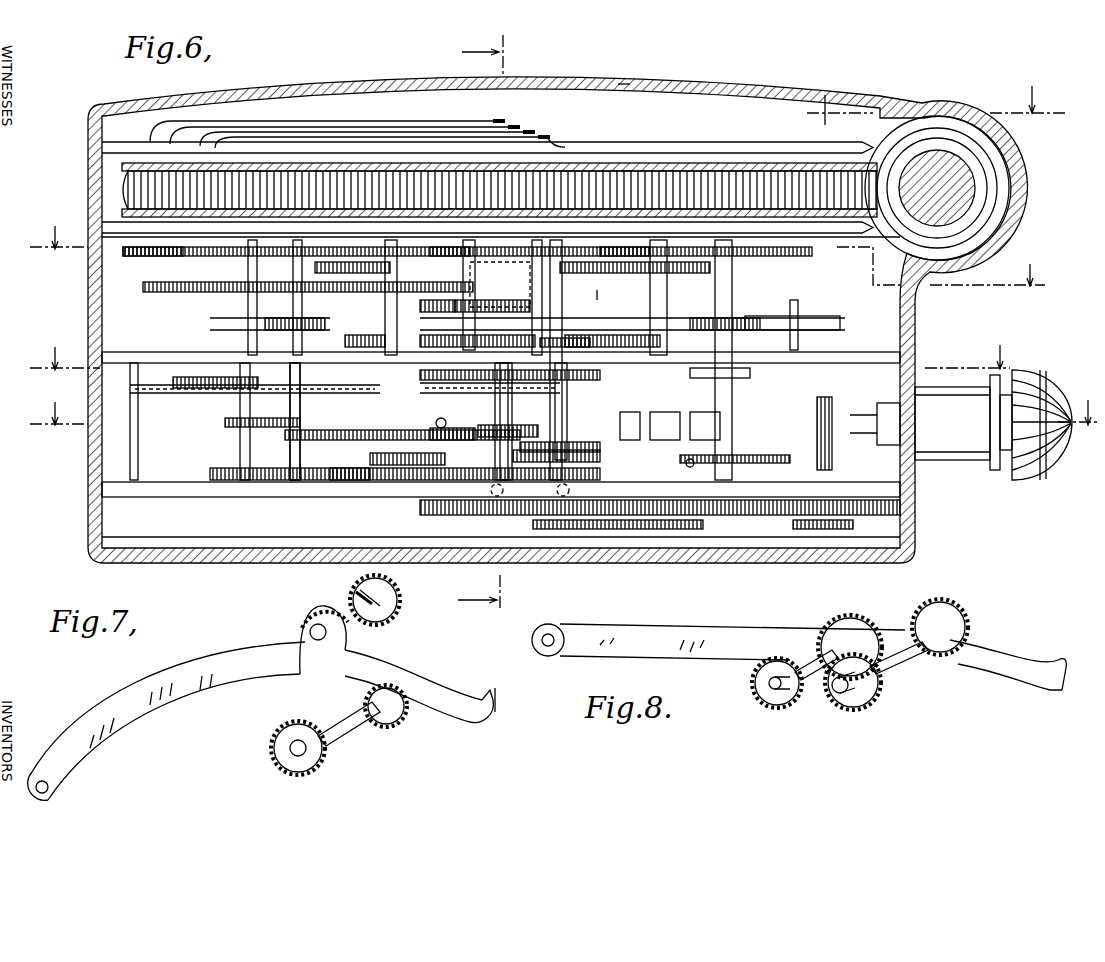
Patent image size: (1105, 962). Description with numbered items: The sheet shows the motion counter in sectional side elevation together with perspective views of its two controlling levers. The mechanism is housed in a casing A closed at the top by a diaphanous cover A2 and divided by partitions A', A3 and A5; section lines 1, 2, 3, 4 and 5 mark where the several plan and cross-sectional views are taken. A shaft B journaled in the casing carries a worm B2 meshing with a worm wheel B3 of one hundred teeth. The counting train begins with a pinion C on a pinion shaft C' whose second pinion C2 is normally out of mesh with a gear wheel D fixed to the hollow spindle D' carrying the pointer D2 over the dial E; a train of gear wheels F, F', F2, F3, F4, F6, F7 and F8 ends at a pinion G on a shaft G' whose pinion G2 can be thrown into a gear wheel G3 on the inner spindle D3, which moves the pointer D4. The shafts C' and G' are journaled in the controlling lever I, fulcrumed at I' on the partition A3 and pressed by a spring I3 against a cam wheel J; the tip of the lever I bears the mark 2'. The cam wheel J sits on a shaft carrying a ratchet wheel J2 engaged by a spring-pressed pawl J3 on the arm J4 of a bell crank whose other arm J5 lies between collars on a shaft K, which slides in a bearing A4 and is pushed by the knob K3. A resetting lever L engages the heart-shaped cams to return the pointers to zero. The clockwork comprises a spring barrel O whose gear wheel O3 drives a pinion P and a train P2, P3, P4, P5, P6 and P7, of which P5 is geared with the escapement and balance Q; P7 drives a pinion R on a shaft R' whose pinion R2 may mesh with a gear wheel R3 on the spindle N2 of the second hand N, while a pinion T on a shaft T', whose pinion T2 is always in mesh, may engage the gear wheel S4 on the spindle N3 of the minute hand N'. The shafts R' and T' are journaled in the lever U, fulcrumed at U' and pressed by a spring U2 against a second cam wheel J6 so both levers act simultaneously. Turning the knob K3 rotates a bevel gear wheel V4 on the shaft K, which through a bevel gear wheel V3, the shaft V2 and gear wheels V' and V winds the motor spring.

In FIG. 6, the casing A is at (546, 320).
In FIG. 6, the cover A2 is at (623, 84).
In FIG. 6, the partition A' is at (483, 241).
In FIG. 6, the partition A3 is at (124, 352).
In FIG. 6, the bearing A4 is at (948, 460).
In FIG. 6, the partition A5 is at (138, 482).
In FIG. 6, the shaft B is at (962, 188).
In FIG. 6, the worm B2 is at (980, 208).
In FIG. 6, the worm wheel B3 is at (750, 165).
In FIG. 6, the pointer N is at (322, 107).
In FIG. 6, the pointer N' is at (340, 106).
In FIG. 6, the spindle N2 is at (503, 120).
In FIG. 6, the hollow spindle N3 is at (522, 127).
In FIG. 6, the gear wheel D is at (492, 296).
In FIG. 6, the hollow spindle D' is at (501, 223).
In FIG. 6, the pointer D2 is at (312, 140).
In FIG. 6, the hollow spindle D3 is at (537, 132).
In FIG. 6, the pointer D4 is at (258, 135).
In FIG. 6, the dial E is at (684, 148).
In FIG. 6, the gear wheel F is at (475, 252).
In FIG. 6, the gear wheel F' is at (524, 268).
In FIG. 6, the gear wheel F2 is at (601, 287).
In FIG. 6, the gear wheel F3 is at (437, 314).
In FIG. 6, the gear wheel F4 is at (182, 292).
In FIG. 6, the gear wheel F6 is at (140, 256).
In FIG. 6, the gear wheel F7 is at (437, 246).
In FIG. 6, the gear wheel F8 is at (603, 246).
In FIG. 6, the pinion G is at (500, 284).
In FIG. 7, the pinion G is at (386, 721).
In FIG. 6, the pinion shaft G' is at (562, 360).
In FIG. 7, the pinion shaft G' is at (349, 731).
In FIG. 6, the pinion G2 is at (560, 354).
In FIG. 7, the pinion G2 is at (308, 775).
In FIG. 6, the gear wheel G3 is at (370, 334).
In FIG. 6, the controlling lever I is at (319, 297).
In FIG. 7, the controlling lever I is at (261, 703).
In FIG. 6, the fulcrum I' is at (264, 297).
In FIG. 6, the spring I3 is at (215, 324).
In FIG. 6, the cam wheel J is at (742, 316).
In FIG. 6, the ratchet wheel J2 is at (703, 418).
In FIG. 8, the pawl J3 is at (1066, 645).
In FIG. 6, the arm J4 is at (628, 418).
In FIG. 6, the arm J5 is at (665, 418).
In FIG. 6, the cam wheel J6 is at (727, 373).
In FIG. 6, the shaft K is at (862, 414).
In FIG. 6, the knob K3 is at (1045, 372).
In FIG. 6, the resetting lever L is at (790, 317).
In FIG. 6, the spring barrel O is at (465, 423).
In FIG. 6, the gear wheel O3 is at (685, 470).
In FIG. 6, the pinion P is at (560, 438).
In FIG. 6, the gear wheel P2 is at (388, 482).
In FIG. 6, the gear wheel P3 is at (352, 455).
In FIG. 6, the gear wheel P4 is at (286, 435).
In FIG. 6, the gear wheel P5 is at (210, 472).
In FIG. 6, the gear wheel P6 is at (352, 482).
In FIG. 6, the gear wheel P7 is at (520, 491).
In FIG. 6, the escapement and balance mechanism Q is at (225, 422).
In FIG. 8, the pinion R is at (777, 697).
In FIG. 6, the pinion shaft R' is at (513, 421).
In FIG. 8, the pinion shaft R' is at (816, 638).
In FIG. 6, the pinion R2 is at (508, 423).
In FIG. 8, the pinion R2 is at (860, 622).
In FIG. 6, the gear wheel R3 is at (445, 427).
In FIG. 6, the gear wheel S4 is at (445, 348).
In FIG. 6, the pinion T is at (518, 375).
In FIG. 8, the pinion T is at (940, 619).
In FIG. 6, the pinion shaft T' is at (574, 411).
In FIG. 8, the pinion shaft T' is at (899, 669).
In FIG. 6, the pinion T2 is at (600, 456).
In FIG. 8, the pinion T2 is at (858, 706).
In FIG. 8, the lever U is at (718, 632).
In FIG. 6, the fulcrum U' is at (255, 396).
In FIG. 6, the spring U2 is at (134, 421).
In FIG. 6, the gear wheel V is at (660, 519).
In FIG. 6, the gear wheel V' is at (501, 550).
In FIG. 6, the shaft V2 is at (785, 490).
In FIG. 6, the bevel gear wheel V3 is at (780, 463).
In FIG. 6, the bevel gear wheel V4 is at (832, 455).
In FIG. 7, the pinion C is at (387, 600).
In FIG. 7, the pinion shaft C' is at (361, 588).
In FIG. 7, the pinion C2 is at (312, 602).
In FIG. 7, the lever end 2' is at (503, 697).
In FIG. 6, the section line 1— 1 is at (936, 99).
In FIG. 6, the section line 2— 2 is at (541, 252).
In FIG. 6, the section line 3— 3 is at (526, 354).
In FIG. 6, the section line 4— 4 is at (565, 405).
In FIG. 6, the section line 5— 5 is at (480, 319).